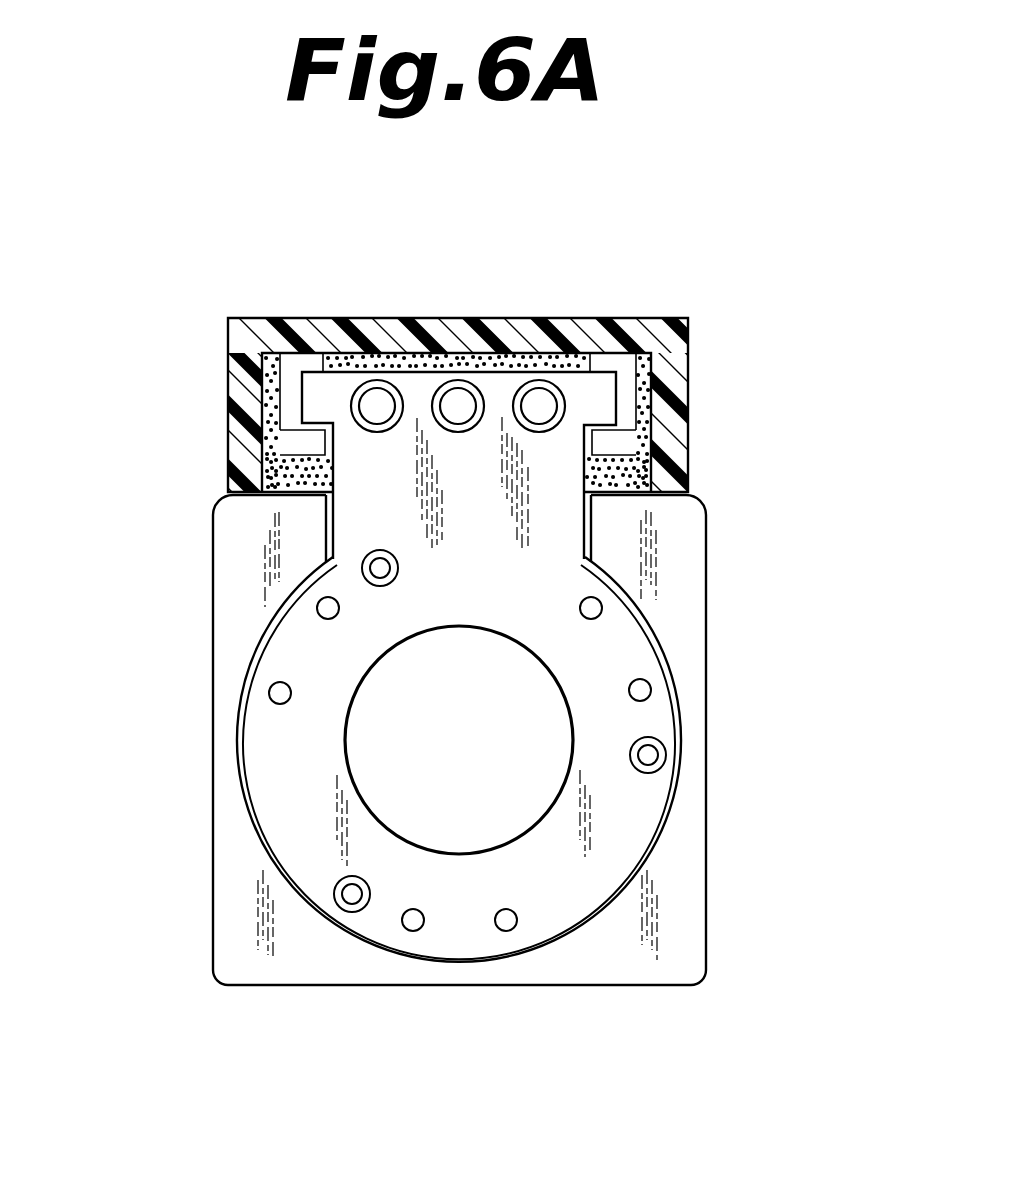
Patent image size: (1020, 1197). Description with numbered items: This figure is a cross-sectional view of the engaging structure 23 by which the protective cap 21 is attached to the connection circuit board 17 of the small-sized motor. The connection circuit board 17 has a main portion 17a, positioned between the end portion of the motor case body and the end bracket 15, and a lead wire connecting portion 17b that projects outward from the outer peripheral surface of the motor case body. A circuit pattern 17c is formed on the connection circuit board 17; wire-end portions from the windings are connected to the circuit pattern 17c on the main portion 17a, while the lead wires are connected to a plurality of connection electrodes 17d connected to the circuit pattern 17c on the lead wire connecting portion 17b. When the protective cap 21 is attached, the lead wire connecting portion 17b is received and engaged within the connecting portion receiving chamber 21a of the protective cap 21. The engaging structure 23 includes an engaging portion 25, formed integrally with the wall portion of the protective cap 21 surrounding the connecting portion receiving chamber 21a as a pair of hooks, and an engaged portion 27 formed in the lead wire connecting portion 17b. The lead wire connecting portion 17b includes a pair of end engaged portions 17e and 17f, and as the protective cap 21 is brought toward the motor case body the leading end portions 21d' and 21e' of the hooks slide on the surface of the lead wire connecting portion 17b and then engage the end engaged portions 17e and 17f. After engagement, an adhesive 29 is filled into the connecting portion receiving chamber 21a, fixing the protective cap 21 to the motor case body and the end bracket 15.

The end bracket 15 is at (213, 898).
The connection circuit board 17 is at (667, 808).
The main portion 17a is at (620, 850).
The lead wire connecting portion 17b is at (498, 367).
The circuit pattern 17c is at (271, 685).
The connection electrodes 17d is at (438, 384).
The end engaged portion 17e is at (310, 395).
The end engaged portion 17f is at (601, 407).
The protective cap 21 is at (672, 320).
The connecting portion receiving chamber 21a is at (648, 466).
The leading end portion 21d' is at (190, 452).
The leading end portion 21e' is at (705, 497).
The engaging structure 23 is at (602, 483).
The engaging portion 25 is at (293, 438).
The engaged portion 27 is at (317, 387).
The adhesive 29 is at (290, 472).